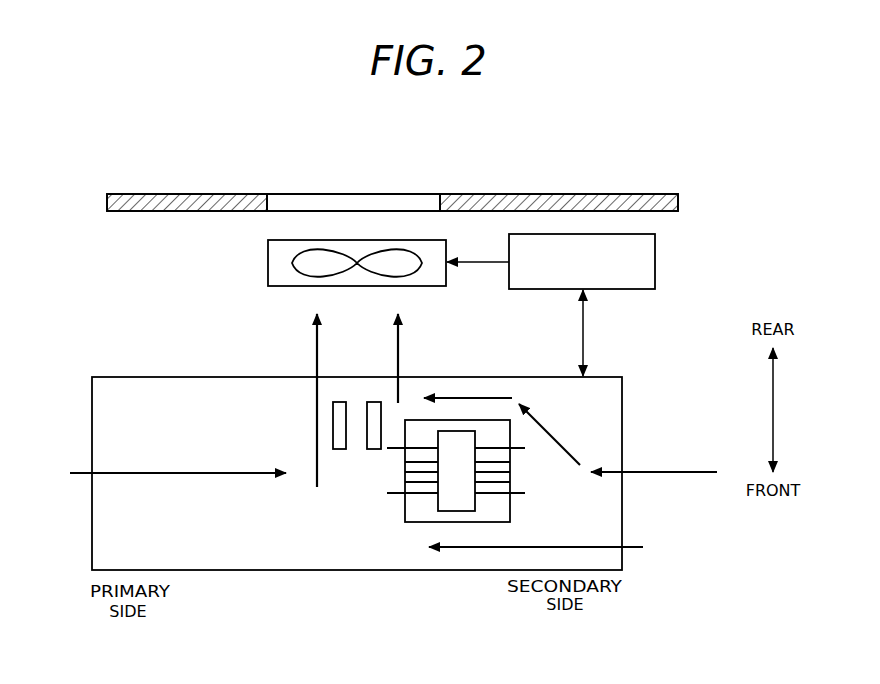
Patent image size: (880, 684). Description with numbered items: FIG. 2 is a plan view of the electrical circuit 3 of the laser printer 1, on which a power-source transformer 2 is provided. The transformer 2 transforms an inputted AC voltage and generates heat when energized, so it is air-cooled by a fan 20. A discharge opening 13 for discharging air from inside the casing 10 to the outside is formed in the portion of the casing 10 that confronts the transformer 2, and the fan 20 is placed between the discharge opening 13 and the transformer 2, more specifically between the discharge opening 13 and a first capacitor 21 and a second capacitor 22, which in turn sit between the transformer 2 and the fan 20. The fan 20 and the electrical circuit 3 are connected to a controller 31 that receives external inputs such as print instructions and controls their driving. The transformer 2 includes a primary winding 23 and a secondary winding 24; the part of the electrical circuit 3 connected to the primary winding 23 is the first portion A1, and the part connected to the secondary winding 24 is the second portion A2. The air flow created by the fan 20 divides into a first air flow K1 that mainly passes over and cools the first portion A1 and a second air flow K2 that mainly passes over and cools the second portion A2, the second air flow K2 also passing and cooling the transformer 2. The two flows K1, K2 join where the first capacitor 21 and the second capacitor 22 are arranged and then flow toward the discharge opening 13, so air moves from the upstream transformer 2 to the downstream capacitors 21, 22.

The laser printer 1 is at (660, 150).
The transformer 2 is at (455, 439).
The electrical circuit 3 is at (326, 553).
The casing 10 is at (538, 194).
The discharge opening 13 is at (440, 194).
The fan 20 is at (357, 248).
The first capacitor 21 is at (339, 402).
The second capacitor 22 is at (375, 402).
The primary winding 23 is at (395, 497).
The secondary winding 24 is at (518, 497).
The controller 31 is at (655, 262).
The first air flow K1 is at (218, 470).
The second air flow K2 is at (678, 474).
The first portion A1 is at (167, 518).
The second portion A2 is at (612, 402).